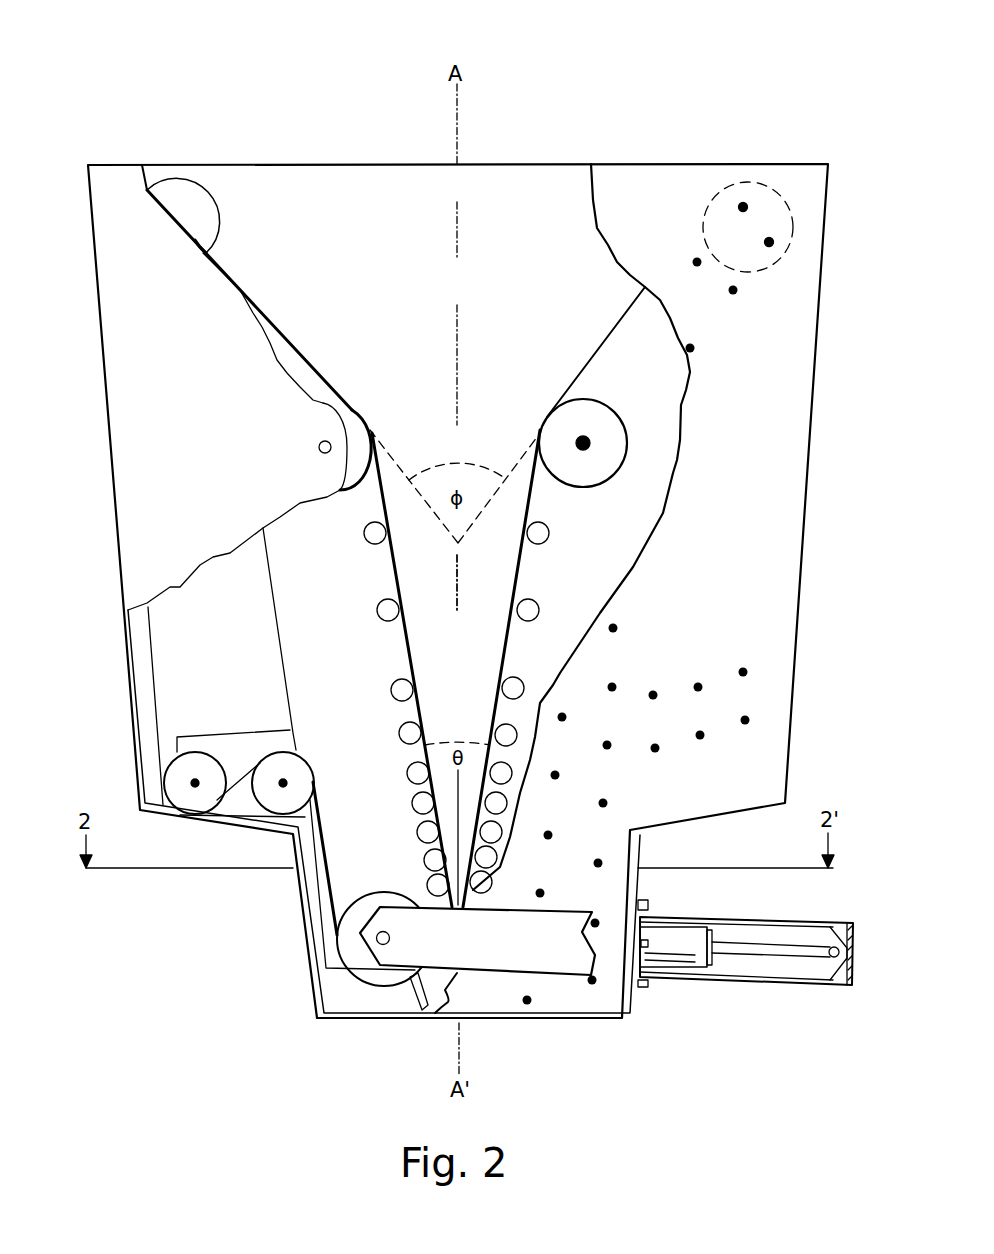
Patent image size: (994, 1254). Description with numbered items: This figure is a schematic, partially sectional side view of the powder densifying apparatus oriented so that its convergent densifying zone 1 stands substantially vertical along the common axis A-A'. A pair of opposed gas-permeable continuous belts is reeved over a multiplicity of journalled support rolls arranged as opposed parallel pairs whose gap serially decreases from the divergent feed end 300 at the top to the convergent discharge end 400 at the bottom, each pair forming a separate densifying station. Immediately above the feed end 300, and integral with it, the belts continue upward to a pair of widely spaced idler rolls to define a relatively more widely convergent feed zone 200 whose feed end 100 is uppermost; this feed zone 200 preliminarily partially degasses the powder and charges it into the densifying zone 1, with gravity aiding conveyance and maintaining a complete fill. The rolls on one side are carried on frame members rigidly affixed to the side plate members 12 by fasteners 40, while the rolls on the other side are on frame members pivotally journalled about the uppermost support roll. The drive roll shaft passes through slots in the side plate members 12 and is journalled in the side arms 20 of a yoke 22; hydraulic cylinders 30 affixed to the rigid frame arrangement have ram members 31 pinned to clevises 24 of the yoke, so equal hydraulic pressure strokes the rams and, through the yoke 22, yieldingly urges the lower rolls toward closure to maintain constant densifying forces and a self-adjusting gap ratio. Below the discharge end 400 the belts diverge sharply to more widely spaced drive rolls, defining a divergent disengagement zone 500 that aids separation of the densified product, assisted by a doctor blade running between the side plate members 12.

The convergent densifying zone 1 is at (465, 645).
The side plate member 12 is at (744, 477).
The side arm 20 is at (490, 953).
The yoke 22 is at (733, 985).
The clevis 24 is at (827, 943).
The hydraulic cylinder 30 is at (683, 956).
The ram member 31 is at (757, 955).
The fastener 40 is at (615, 684).
The feed end of feed zone 100 is at (476, 192).
The convergent feed zone 200 is at (476, 294).
The divergent feed end 300 is at (476, 460).
The convergent discharge end 400 is at (462, 876).
The divergent disengagement zone 500 is at (440, 988).